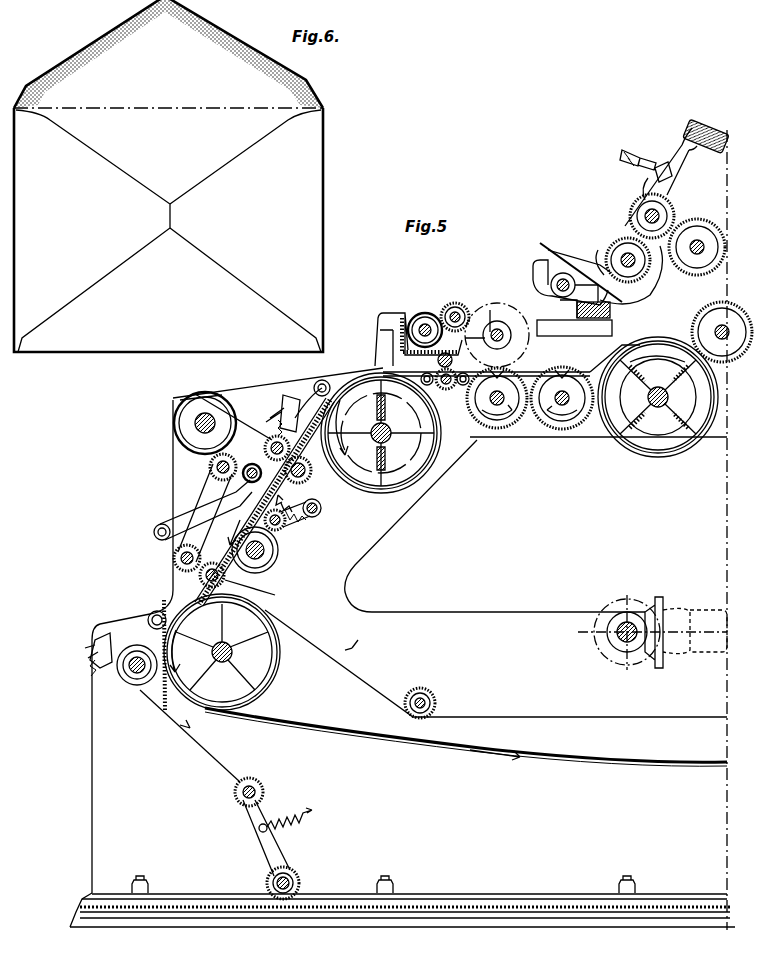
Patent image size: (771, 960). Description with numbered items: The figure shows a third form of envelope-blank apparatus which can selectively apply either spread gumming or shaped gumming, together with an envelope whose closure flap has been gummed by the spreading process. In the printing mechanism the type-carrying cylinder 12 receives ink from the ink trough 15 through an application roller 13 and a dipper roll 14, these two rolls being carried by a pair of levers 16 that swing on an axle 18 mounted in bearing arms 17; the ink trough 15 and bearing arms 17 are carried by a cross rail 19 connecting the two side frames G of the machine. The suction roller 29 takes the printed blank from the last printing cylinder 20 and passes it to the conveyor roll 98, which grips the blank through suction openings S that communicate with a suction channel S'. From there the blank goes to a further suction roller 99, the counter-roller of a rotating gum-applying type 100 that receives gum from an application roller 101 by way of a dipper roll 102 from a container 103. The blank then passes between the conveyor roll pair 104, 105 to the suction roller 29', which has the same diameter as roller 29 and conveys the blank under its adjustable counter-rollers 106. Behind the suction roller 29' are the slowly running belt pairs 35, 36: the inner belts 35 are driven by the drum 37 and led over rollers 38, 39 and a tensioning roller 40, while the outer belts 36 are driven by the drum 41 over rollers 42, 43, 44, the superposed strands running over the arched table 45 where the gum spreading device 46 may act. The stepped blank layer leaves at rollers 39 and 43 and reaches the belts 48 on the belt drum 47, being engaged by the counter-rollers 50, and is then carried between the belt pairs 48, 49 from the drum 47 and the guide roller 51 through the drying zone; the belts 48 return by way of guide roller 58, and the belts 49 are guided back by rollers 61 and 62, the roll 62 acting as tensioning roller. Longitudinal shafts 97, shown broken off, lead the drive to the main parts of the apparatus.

The type-carrying cylinder 12 is at (698, 230).
The application roller 13 is at (662, 204).
The dipper roll 14 is at (614, 250).
The ink trough 15 is at (580, 264).
The levers 16 is at (626, 223).
The bearing arms 17 is at (556, 300).
The axle 18 is at (550, 286).
The cross rail 19 is at (577, 312).
The printing cylinder 20 is at (710, 324).
The suction roller 29 is at (658, 407).
The suction roller 29' is at (386, 439).
The inner belts 35 is at (287, 504).
The outer belts 36 is at (249, 480).
The drum 37 is at (278, 552).
The roller 38 is at (306, 478).
The roller 39 is at (226, 580).
The tensioning roller 40 is at (285, 526).
The drum 41 is at (178, 420).
The roller 42 is at (268, 446).
The roller 43 is at (173, 560).
The roller 44 is at (212, 468).
The arched table 45 is at (264, 502).
The gum spreading device 46 is at (208, 500).
The belt drum 47 is at (270, 665).
The inner belts 48 is at (366, 685).
The outer belts 49 is at (240, 732).
The counter-rollers 50 is at (156, 610).
The guide roller 51 is at (124, 680).
The guide roller 58 is at (431, 697).
The guide roller 61 is at (292, 882).
The tensioning roller 62 is at (234, 794).
The longitudinal shafts 97 is at (729, 628).
The conveyor roll 98 is at (562, 430).
The suction roller 99 is at (500, 428).
The gum-applying type 100 is at (490, 322).
The application roller 101 is at (455, 303).
The dipper roll 102 is at (423, 312).
The container 103 is at (400, 346).
The conveyor roll 104 is at (448, 391).
The conveyor roll 105 is at (438, 361).
The counter-rollers 106 is at (321, 380).
The side frames G is at (356, 553).
The suction openings S is at (534, 421).
The suction channel S' is at (526, 409).